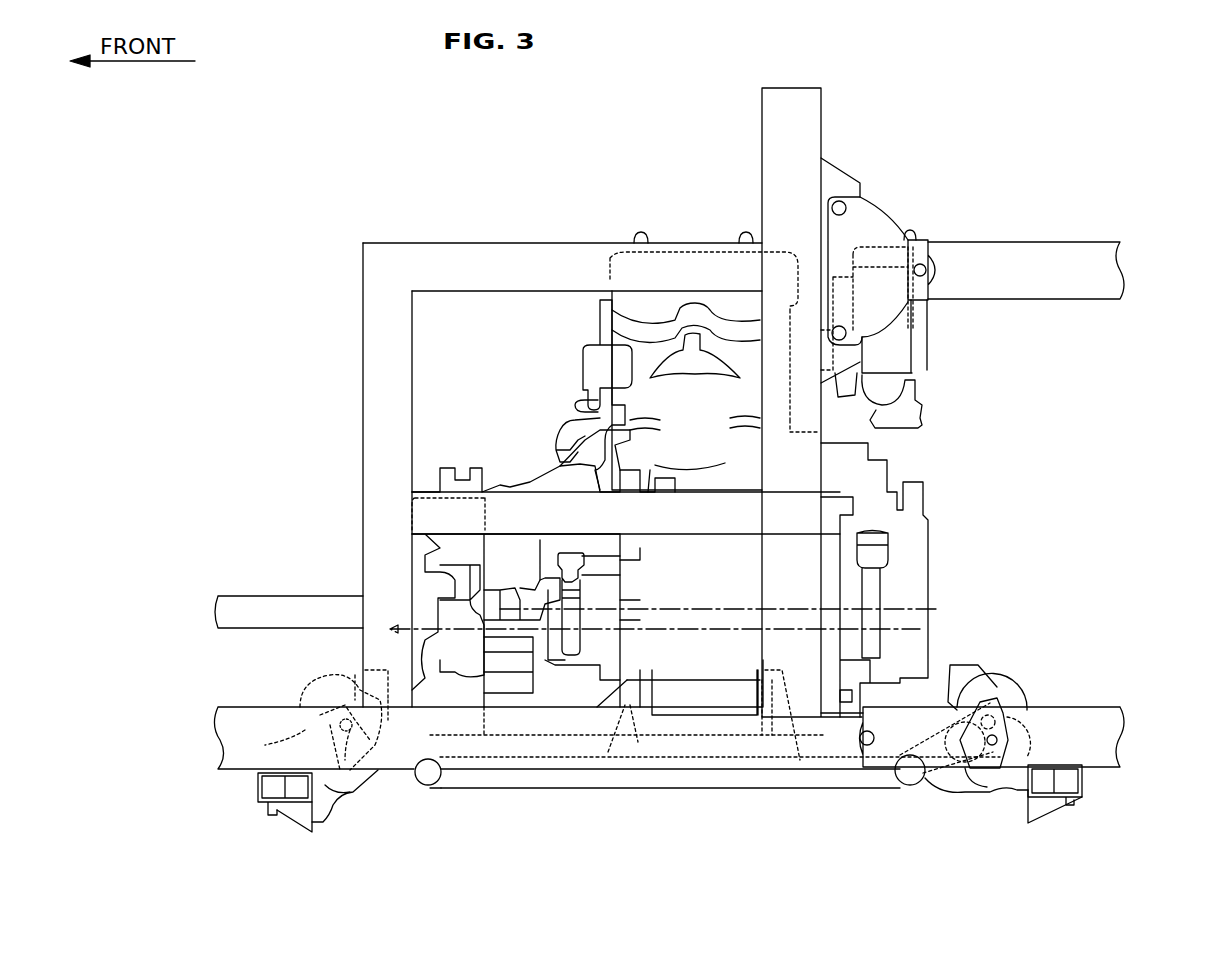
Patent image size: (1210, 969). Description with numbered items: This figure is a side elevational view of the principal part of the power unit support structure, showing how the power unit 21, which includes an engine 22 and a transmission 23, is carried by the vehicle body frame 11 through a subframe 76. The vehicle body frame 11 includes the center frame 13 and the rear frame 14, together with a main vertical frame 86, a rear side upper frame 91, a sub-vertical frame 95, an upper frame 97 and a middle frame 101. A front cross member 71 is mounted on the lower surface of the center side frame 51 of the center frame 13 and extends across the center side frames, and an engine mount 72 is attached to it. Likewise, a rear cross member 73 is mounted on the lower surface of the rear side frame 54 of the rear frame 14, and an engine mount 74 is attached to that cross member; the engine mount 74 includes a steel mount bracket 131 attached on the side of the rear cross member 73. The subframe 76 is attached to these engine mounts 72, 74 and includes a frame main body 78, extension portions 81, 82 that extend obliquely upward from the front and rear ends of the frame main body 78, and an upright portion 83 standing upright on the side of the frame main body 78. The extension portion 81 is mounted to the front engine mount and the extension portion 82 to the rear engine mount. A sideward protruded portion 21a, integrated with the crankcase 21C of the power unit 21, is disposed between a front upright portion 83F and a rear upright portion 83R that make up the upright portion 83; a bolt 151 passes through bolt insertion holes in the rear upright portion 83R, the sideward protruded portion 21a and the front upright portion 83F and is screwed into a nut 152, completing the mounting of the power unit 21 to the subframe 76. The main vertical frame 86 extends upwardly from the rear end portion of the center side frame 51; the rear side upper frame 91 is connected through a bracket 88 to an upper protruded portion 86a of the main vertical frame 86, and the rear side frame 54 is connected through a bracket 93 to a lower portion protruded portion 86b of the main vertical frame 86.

The vehicle body frame 11 is at (355, 333).
The center frame 13 is at (233, 700).
The rear frame 14 is at (1092, 705).
The power unit 21 is at (592, 335).
The sideward protruded portion 21a is at (693, 697).
The crankcase 21C is at (550, 695).
The engine 22 is at (722, 330).
The transmission 23 is at (905, 530).
The center side frame 51 is at (218, 770).
The rear side frame 54 is at (1117, 745).
The front cross member 71 is at (258, 790).
The engine mount 72 is at (358, 800).
The rear cross member 73 is at (1087, 783).
The engine mount 74 is at (980, 790).
The subframe 76 is at (552, 790).
The frame main body 78 is at (590, 790).
The extension portion 81 is at (403, 782).
The extension portion 82 is at (927, 783).
The upright portion 83 is at (785, 690).
The front upright portion 83F is at (633, 710).
The rear upright portion 83R is at (753, 745).
The main vertical frame 86 is at (775, 112).
The upper protruded portion 86a is at (830, 165).
The lower portion protruded portion 86b is at (843, 760).
The bracket 88 is at (870, 222).
The rear side upper frame 91 is at (1025, 253).
The bracket 93 is at (920, 707).
The sub-vertical frame 95 is at (365, 368).
The upper frame 97 is at (422, 262).
The middle frame 101 is at (418, 494).
The mount bracket 131 is at (327, 783).
The bolt 151 is at (786, 720).
The nut 152 is at (630, 703).